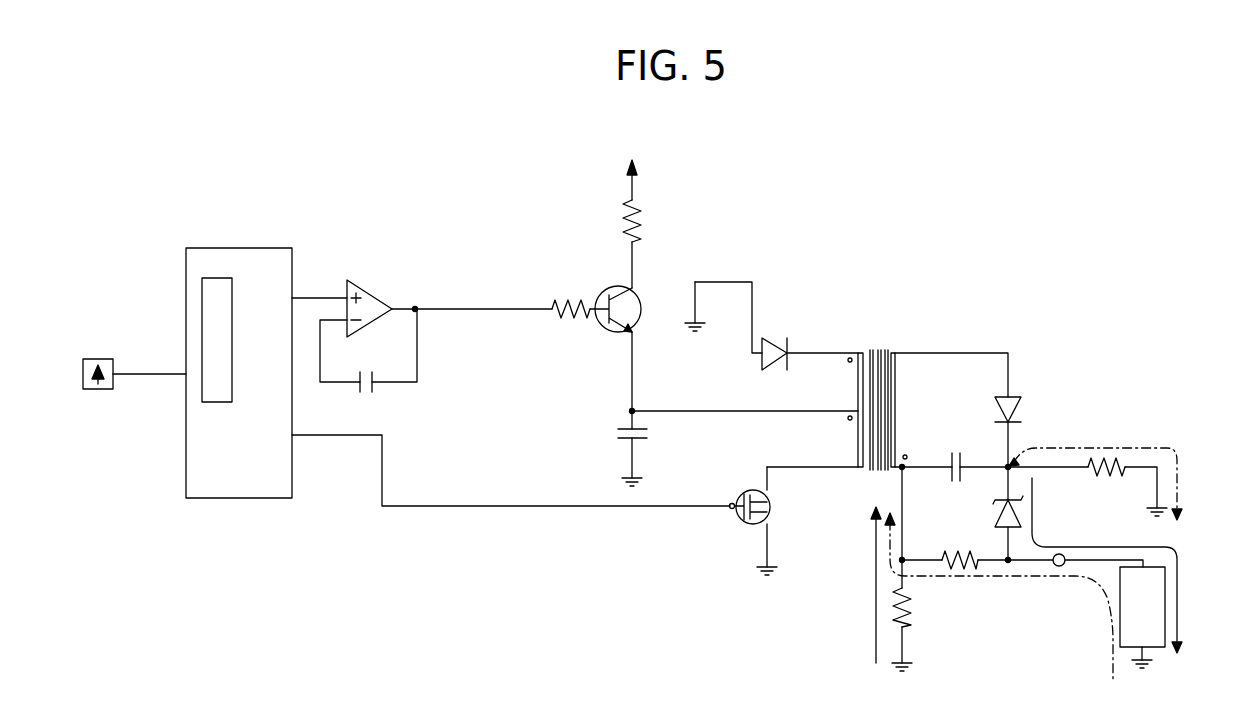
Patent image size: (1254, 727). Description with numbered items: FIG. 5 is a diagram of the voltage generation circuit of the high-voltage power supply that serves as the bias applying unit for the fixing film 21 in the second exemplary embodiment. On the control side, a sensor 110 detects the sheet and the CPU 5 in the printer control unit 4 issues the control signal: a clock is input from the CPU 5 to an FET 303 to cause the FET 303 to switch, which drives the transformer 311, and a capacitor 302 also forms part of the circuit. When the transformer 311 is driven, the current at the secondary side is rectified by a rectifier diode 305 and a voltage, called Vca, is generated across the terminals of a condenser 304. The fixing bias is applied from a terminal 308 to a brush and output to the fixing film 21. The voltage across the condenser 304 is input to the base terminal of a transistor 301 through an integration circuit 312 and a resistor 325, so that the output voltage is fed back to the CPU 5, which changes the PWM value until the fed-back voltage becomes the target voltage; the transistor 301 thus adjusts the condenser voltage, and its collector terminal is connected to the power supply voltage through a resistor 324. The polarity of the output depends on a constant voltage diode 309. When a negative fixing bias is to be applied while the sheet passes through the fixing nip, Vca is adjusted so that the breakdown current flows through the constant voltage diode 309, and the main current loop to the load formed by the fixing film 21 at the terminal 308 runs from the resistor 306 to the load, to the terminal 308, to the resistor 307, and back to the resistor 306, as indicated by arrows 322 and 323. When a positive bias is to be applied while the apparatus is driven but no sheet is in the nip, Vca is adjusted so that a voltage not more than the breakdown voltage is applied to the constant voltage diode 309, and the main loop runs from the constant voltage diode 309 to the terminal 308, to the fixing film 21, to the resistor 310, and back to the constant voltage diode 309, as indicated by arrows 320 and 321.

The printer control unit 4 is at (242, 500).
The CPU 5 is at (201, 318).
The sensor 110 is at (103, 390).
The integration circuit 312 is at (370, 288).
The resistor 325 is at (565, 297).
The transistor 301 is at (603, 328).
The resistor 324 is at (648, 217).
The capacitor 302 is at (618, 437).
The transformer 311 is at (877, 350).
The FET 303 is at (747, 523).
The condenser 304 is at (953, 450).
The rectifier diode 305 is at (1023, 407).
The resistor 306 is at (1112, 452).
The constant voltage diode 309 is at (997, 515).
The resistor 307 is at (963, 572).
The terminal 308 is at (1058, 570).
The fixing film 21 is at (1165, 613).
The resistor 310 is at (913, 603).
The arrow 321 is at (875, 588).
The arrow 320 is at (1033, 514).
The arrow 322 is at (1178, 497).
The arrow 323 is at (1112, 655).